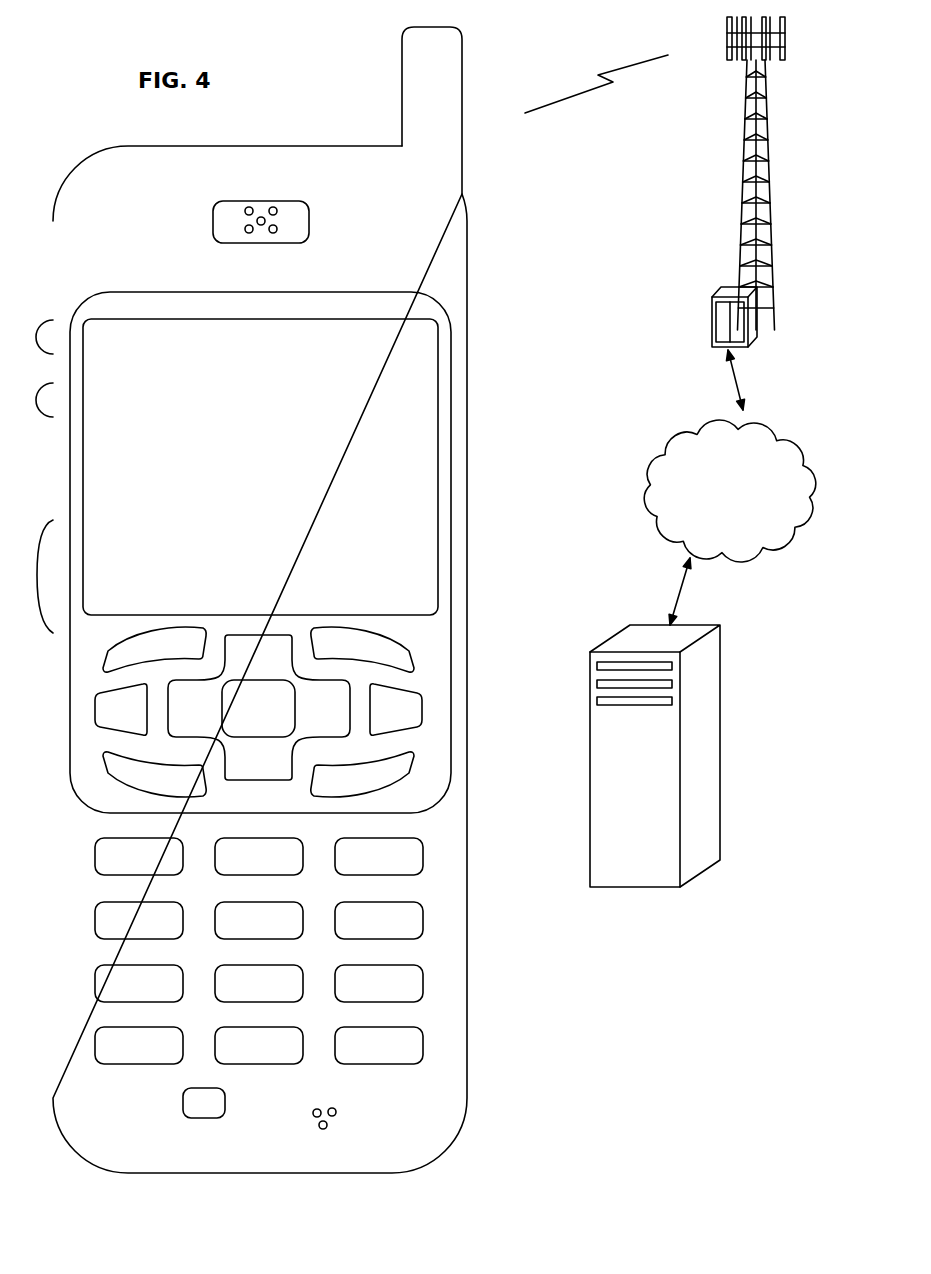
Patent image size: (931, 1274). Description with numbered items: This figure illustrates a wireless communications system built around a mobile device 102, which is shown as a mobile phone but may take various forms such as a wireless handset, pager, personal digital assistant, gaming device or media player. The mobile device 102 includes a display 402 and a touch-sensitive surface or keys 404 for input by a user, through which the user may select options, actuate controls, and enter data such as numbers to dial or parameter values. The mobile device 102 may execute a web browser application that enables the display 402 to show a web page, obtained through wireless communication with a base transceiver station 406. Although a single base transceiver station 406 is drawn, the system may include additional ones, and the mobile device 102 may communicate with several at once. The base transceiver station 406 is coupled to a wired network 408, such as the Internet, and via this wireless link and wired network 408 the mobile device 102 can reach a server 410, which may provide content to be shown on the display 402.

The mobile device 102 is at (107, 1171).
The display 402 is at (440, 332).
The touch-sensitive surface or keys 404 is at (479, 1072).
The base transceiver station 406 is at (742, 196).
The wired network 408 is at (660, 540).
The server 410 is at (633, 887).